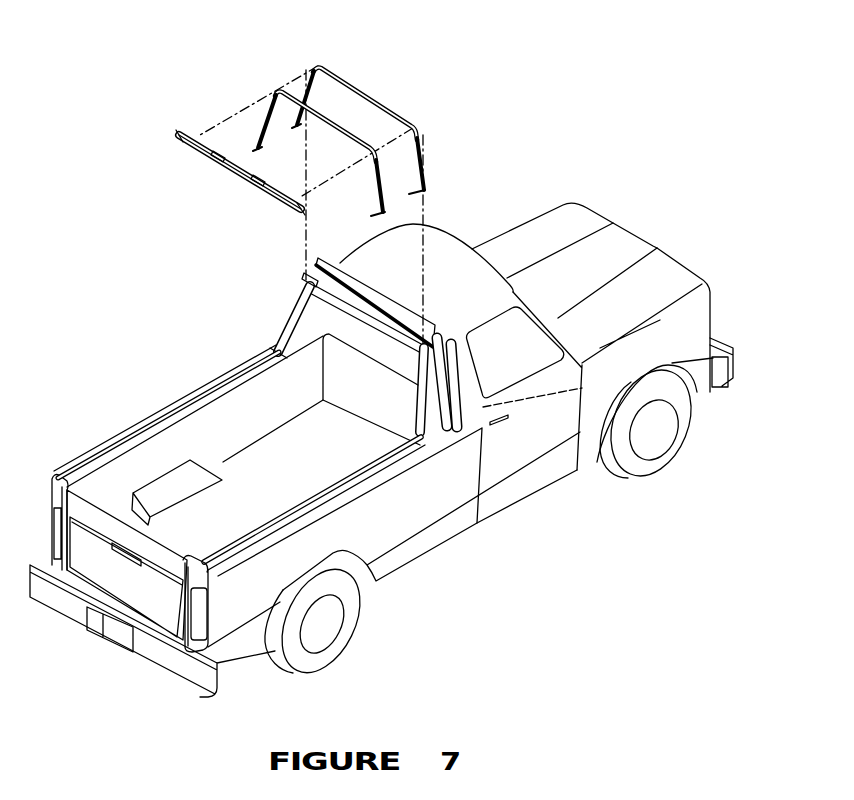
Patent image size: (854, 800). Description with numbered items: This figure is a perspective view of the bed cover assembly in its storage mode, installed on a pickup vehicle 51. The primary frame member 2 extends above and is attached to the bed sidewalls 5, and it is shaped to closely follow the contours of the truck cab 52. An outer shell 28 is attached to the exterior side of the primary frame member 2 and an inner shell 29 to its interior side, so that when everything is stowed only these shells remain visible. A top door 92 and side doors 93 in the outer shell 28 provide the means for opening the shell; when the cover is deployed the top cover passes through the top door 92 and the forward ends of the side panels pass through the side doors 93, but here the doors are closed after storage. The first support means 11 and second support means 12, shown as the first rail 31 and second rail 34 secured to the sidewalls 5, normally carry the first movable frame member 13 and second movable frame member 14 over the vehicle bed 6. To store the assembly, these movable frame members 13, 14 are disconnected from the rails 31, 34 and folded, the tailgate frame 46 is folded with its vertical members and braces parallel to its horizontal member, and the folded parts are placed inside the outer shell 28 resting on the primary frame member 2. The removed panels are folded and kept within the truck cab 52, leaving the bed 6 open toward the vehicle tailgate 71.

The primary frame member 2 is at (358, 291).
The bed sidewalls 5 is at (230, 450).
The vehicle bed 6 is at (281, 480).
The first support means 11 is at (266, 514).
The second support means 12 is at (160, 404).
The first movable frame member 13 is at (339, 64).
The second movable frame member 14 is at (274, 78).
The outer shell 28 is at (438, 336).
The inner shell 29 is at (312, 330).
The first rail 31 is at (232, 542).
The second rail 34 is at (117, 431).
The tailgate frame 46 is at (180, 127).
The vehicle 51 is at (530, 584).
The truck cab 52 is at (462, 216).
The vehicle tailgate 71 is at (155, 600).
The top door 92 is at (378, 296).
The side doors 93 is at (308, 275).